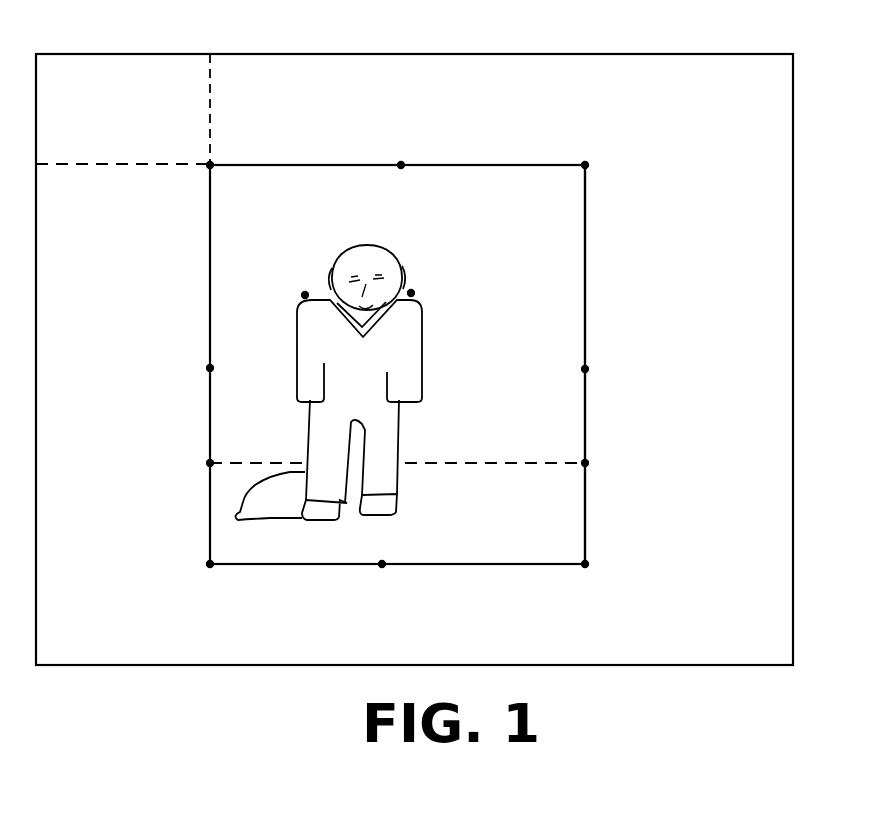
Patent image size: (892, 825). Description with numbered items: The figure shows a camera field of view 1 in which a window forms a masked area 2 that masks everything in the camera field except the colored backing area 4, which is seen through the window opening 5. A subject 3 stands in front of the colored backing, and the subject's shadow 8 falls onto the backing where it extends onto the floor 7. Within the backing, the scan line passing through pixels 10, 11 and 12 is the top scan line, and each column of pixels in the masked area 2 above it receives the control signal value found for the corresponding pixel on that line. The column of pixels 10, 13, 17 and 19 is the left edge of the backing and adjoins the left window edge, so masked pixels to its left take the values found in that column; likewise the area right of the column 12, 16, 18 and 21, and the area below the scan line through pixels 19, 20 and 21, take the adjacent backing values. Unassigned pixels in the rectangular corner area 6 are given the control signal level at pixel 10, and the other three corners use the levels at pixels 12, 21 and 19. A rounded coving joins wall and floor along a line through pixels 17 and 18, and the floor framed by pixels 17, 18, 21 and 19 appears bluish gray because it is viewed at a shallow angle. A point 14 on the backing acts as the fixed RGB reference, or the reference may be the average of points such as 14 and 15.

The camera field of view 1 is at (249, 54).
The masked area 2 is at (365, 88).
The subject 3 is at (383, 247).
The colored backing area 4 is at (507, 208).
The window opening 5 is at (587, 217).
The rectangular corner area 6 is at (210, 118).
The floor 7 is at (507, 488).
The subject's shadow 8 is at (268, 509).
The pixel 10 is at (230, 178).
The pixel 11 is at (399, 179).
The pixel 12 is at (570, 179).
The pixel 13 is at (230, 368).
The reference point 14 is at (303, 281).
The point 15 is at (430, 289).
The pixel 16 is at (569, 370).
The pixel 17 is at (228, 449).
The pixel 18 is at (567, 451).
The pixel 19 is at (228, 551).
The pixel 20 is at (384, 551).
The pixel 21 is at (567, 551).